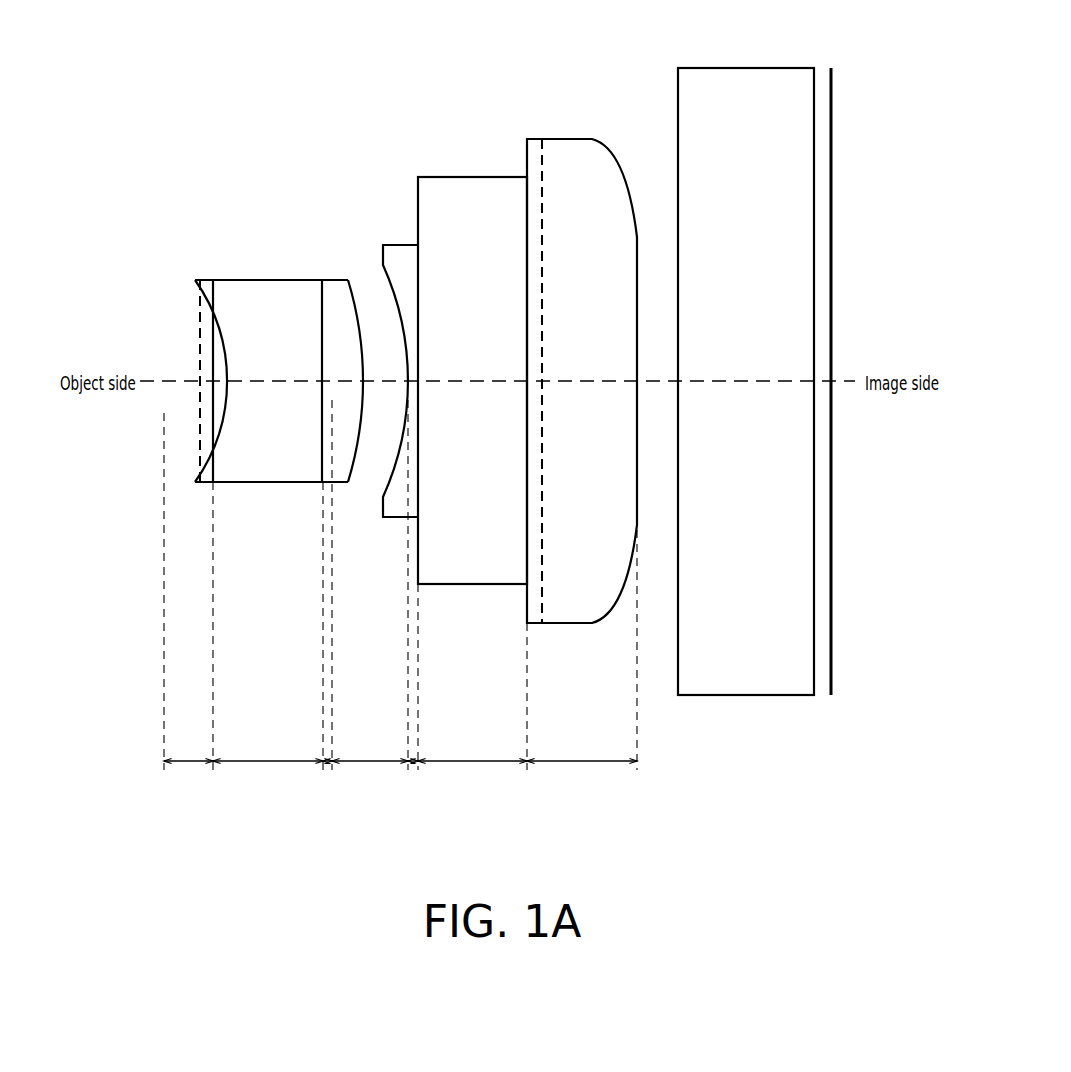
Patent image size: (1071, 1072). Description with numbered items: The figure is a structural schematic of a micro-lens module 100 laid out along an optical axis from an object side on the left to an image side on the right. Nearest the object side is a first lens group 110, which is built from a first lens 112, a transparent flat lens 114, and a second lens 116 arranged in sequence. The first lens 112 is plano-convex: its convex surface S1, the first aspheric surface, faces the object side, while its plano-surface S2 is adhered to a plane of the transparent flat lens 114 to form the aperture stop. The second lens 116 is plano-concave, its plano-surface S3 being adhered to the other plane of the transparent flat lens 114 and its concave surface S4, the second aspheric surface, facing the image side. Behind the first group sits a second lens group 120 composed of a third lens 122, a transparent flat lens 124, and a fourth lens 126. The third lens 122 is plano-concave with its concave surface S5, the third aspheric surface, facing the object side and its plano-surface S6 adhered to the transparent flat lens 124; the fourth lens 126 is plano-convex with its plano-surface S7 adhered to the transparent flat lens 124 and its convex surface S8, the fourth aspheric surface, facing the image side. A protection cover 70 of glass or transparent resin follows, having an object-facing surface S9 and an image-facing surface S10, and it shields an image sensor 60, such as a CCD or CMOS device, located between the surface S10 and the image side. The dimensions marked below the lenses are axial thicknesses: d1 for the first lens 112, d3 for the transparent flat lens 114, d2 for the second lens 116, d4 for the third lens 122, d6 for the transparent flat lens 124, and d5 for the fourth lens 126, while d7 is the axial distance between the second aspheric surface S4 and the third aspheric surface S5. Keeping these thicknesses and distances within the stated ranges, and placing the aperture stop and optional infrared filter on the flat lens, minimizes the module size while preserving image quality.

The micro-lens module 100 is at (907, 828).
The first lens group 110 is at (268, 448).
The first lens 112 is at (190, 457).
The transparent flat lens 114 is at (258, 457).
The second lens 116 is at (323, 423).
The second lens group 120 is at (495, 437).
The third lens 122 is at (400, 507).
The transparent flat lens 124 is at (463, 565).
The fourth lens 126 is at (582, 408).
The protection cover 70 is at (737, 665).
The image sensor 60 is at (833, 665).
The convex surface S1 is at (182, 298).
The plano-surface S2 is at (215, 302).
The plano-surface S3 is at (320, 300).
The concave surface S4 is at (342, 303).
The concave surface S5 is at (397, 293).
The plano-surface S6 is at (418, 200).
The plano-surface S7 is at (527, 200).
The convex surface S8 is at (617, 158).
The surface S9 is at (677, 85).
The surface S10 is at (817, 103).
The thickness of first lens d1 is at (188, 785).
The thickness of second lens d2 is at (325, 785).
The thickness of transparent flat lens d3 is at (268, 785).
The thickness of third lens d4 is at (412, 785).
The thickness of fourth lens d5 is at (370, 785).
The thickness of transparent flat lens d6 is at (472, 785).
The distance between second and third aspheric surfaces d7 is at (582, 785).